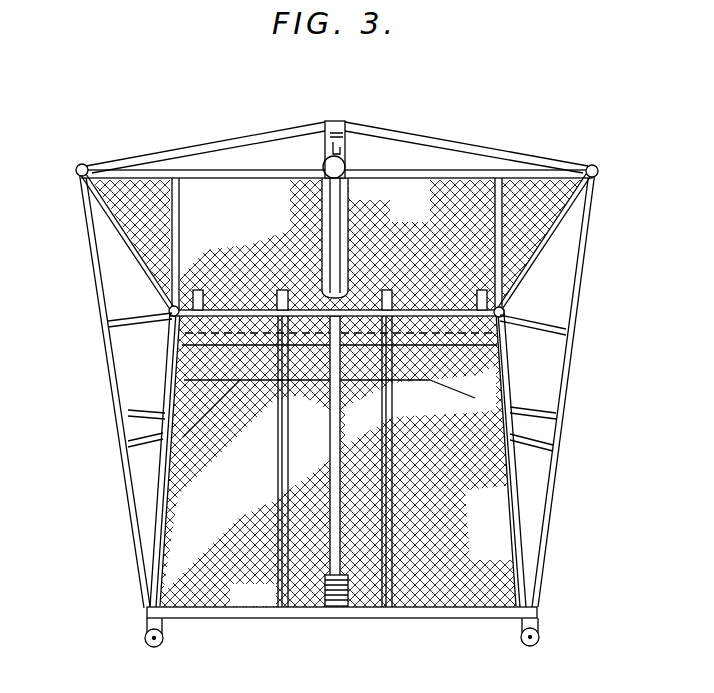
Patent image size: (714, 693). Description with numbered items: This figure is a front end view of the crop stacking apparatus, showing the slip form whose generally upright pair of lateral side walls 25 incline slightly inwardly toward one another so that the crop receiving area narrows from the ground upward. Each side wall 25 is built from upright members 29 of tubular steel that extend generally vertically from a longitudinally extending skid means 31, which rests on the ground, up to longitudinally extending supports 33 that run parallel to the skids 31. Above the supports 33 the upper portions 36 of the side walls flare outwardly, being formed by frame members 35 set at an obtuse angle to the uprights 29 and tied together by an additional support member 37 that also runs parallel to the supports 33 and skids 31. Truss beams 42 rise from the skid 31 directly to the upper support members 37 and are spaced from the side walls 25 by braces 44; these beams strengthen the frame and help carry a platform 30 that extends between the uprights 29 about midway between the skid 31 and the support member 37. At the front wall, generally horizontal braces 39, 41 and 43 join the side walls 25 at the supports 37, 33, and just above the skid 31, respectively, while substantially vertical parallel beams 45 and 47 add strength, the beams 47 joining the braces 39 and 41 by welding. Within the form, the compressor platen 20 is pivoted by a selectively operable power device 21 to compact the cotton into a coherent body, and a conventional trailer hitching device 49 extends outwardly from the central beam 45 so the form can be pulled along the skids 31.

The compressor platen 20 is at (475, 398).
The power device 21 is at (346, 160).
The lateral side walls 25 is at (158, 378).
The upright members 29 is at (157, 522).
The platform 30 is at (140, 413).
The skid means 31 is at (155, 645).
The longitudinally extending supports 33 is at (168, 316).
The frame members 35 is at (122, 232).
The upper portions of the side walls 36 is at (96, 220).
The support member 37 is at (84, 164).
The horizontal brace 39 is at (463, 176).
The horizontal brace 41 is at (407, 314).
The truss beams 42 is at (100, 293).
The horizontal brace 43 is at (432, 609).
The braces 44 is at (127, 321).
The central vertical beam 45 is at (340, 542).
The vertical parallel beams 47 is at (176, 216).
The trailer hitching device 49 is at (338, 596).